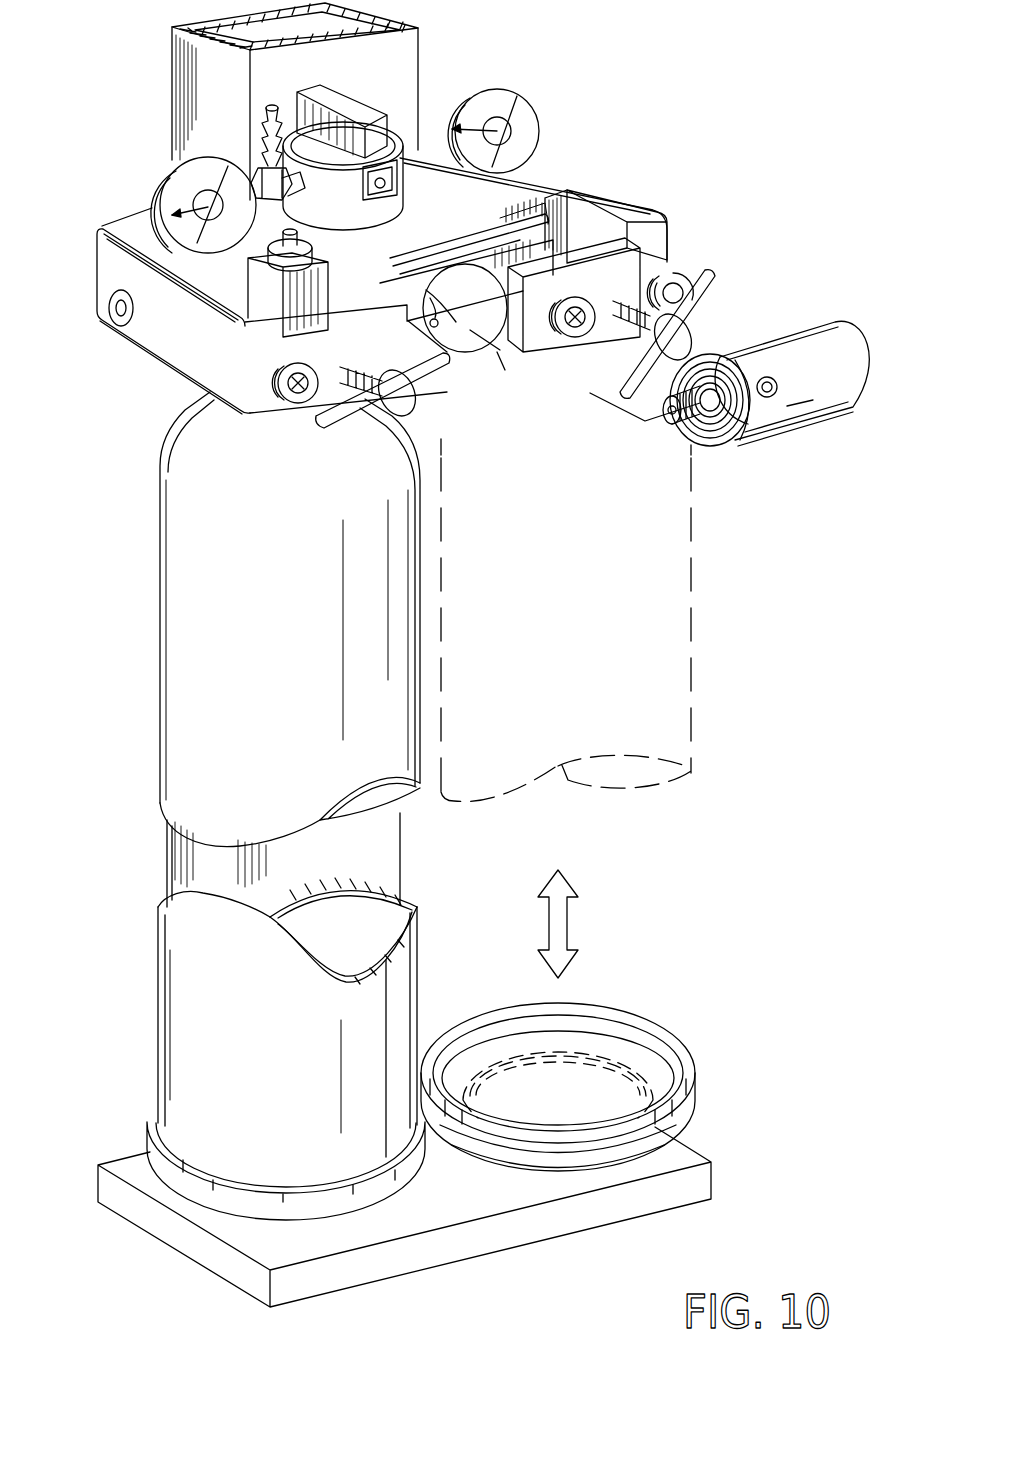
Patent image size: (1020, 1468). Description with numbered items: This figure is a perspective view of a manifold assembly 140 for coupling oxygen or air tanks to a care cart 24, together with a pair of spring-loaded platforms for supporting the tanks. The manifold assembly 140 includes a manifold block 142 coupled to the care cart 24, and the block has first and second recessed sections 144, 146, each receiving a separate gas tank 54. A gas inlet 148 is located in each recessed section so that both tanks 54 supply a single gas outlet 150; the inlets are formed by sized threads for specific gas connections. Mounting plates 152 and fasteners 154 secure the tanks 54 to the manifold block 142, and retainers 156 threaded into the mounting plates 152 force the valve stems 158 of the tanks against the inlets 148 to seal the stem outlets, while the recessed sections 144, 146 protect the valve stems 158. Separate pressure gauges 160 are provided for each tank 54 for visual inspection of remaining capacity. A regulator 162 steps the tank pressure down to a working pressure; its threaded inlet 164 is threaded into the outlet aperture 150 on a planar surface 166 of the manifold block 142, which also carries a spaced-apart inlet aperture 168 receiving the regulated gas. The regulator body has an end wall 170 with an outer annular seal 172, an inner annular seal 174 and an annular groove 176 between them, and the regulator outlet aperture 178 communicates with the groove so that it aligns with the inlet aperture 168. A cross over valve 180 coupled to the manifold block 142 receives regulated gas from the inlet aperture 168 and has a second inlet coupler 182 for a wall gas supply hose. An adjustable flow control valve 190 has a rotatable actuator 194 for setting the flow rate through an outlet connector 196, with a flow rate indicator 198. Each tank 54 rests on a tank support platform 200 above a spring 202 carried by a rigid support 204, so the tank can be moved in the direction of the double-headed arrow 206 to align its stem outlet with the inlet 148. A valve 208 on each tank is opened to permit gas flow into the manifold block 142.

The care cart 24 is at (172, 110).
The gas tank 54 is at (200, 604).
The manifold assembly 140 is at (685, 172).
The manifold block 142 is at (108, 262).
The first recessed section 144 is at (340, 300).
The second recessed section 146 is at (585, 205).
The gas inlet 148 is at (545, 192).
The gas outlet 150 is at (433, 290).
The mounting plate 152 is at (323, 420).
The fastener 154 is at (298, 396).
The retainer 156 is at (417, 403).
The valve stem 158 is at (262, 280).
The pressure gauge 160 is at (165, 190).
The regulator 162 is at (805, 432).
The threaded inlet 164 is at (673, 428).
The planar surface 166 is at (478, 293).
The inlet aperture 168 is at (496, 358).
The end wall 170 is at (706, 455).
The outer annular seal 172 is at (722, 433).
The inner annular seal 174 is at (705, 385).
The annular groove 176 is at (845, 328).
The outlet aperture 178 is at (767, 375).
The cross over valve 180 is at (836, 398).
The second inlet coupler 182 is at (474, 332).
The adjustable flow control valve 190 is at (375, 105).
The rotatable actuator 194 is at (340, 108).
The outlet connector 196 is at (268, 138).
The flow rate indicator 198 is at (367, 187).
The tank support platform 200 is at (618, 1008).
The spring 202 is at (603, 1162).
The rigid support 204 is at (498, 1238).
The double-headed arrow 206 is at (553, 932).
The valve 208 is at (200, 290).